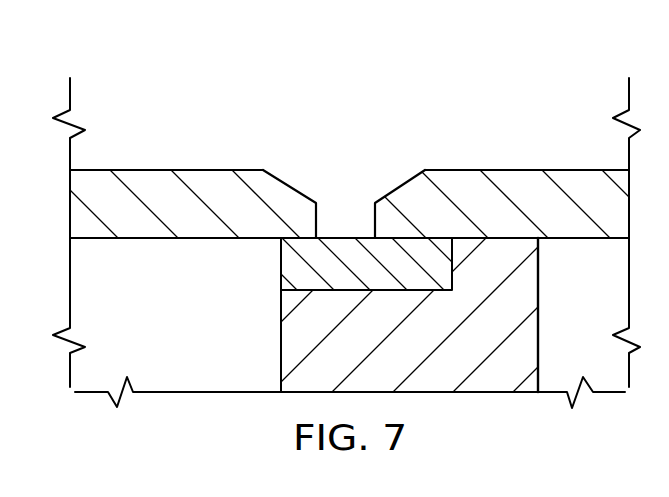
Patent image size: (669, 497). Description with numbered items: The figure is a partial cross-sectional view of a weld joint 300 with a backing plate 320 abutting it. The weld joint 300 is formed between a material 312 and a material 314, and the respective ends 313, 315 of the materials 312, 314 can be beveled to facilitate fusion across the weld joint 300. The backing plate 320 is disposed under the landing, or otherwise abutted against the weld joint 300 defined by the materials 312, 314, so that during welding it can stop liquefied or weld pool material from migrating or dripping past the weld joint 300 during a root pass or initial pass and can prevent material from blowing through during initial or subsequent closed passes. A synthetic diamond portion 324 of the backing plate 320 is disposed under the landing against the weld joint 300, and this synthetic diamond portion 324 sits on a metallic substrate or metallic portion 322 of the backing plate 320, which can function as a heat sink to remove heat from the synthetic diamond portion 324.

The weld joint 300 is at (516, 60).
The material 312 is at (457, 180).
The end 313 is at (398, 183).
The material 314 is at (205, 180).
The end 315 is at (293, 185).
The backing plate 320 is at (540, 287).
The metallic portion 322 is at (290, 345).
The synthetic diamond portion 324 is at (290, 263).